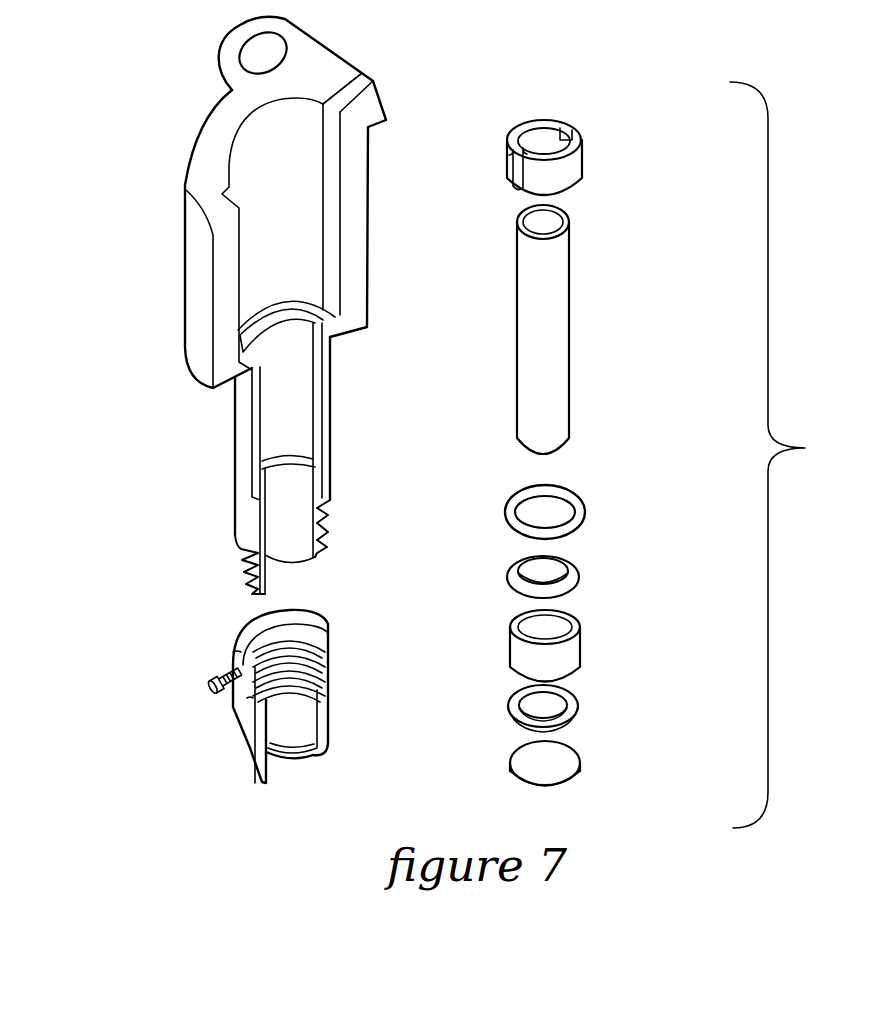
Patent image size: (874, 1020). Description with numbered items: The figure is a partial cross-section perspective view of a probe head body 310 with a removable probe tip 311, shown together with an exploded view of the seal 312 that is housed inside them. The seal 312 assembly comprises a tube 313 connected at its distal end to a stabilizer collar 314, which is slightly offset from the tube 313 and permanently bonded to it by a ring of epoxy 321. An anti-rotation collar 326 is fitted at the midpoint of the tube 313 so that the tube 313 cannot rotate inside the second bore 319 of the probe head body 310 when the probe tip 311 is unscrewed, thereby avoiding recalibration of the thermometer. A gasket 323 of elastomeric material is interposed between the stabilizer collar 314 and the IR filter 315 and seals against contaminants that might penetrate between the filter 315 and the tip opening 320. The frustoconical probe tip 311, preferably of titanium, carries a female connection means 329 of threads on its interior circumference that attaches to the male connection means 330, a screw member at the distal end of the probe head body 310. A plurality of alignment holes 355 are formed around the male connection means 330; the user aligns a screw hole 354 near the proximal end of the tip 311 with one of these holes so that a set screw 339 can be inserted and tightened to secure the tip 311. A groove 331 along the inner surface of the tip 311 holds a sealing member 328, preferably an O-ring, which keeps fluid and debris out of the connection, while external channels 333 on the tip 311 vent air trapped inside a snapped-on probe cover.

The probe head body 310 is at (209, 93).
The removable probe tip 311 is at (232, 639).
The seal 312 is at (794, 455).
The tube 313 is at (562, 346).
The stabilizer collar 314 is at (582, 639).
The IR filter 315 is at (582, 765).
The second bore 319 is at (288, 423).
The tip opening 320 is at (288, 757).
The ring of epoxy 321 is at (580, 576).
The gasket 323 is at (582, 705).
The anti-rotation collar 326 is at (577, 173).
The sealing member 328 is at (585, 512).
The female connection means 329 is at (330, 622).
The male connection means 330 is at (330, 536).
The groove 331 is at (328, 690).
The external channels 333 is at (233, 650).
The set screw 339 is at (212, 688).
The screw hole 354 is at (250, 698).
The alignment holes 355 is at (248, 546).